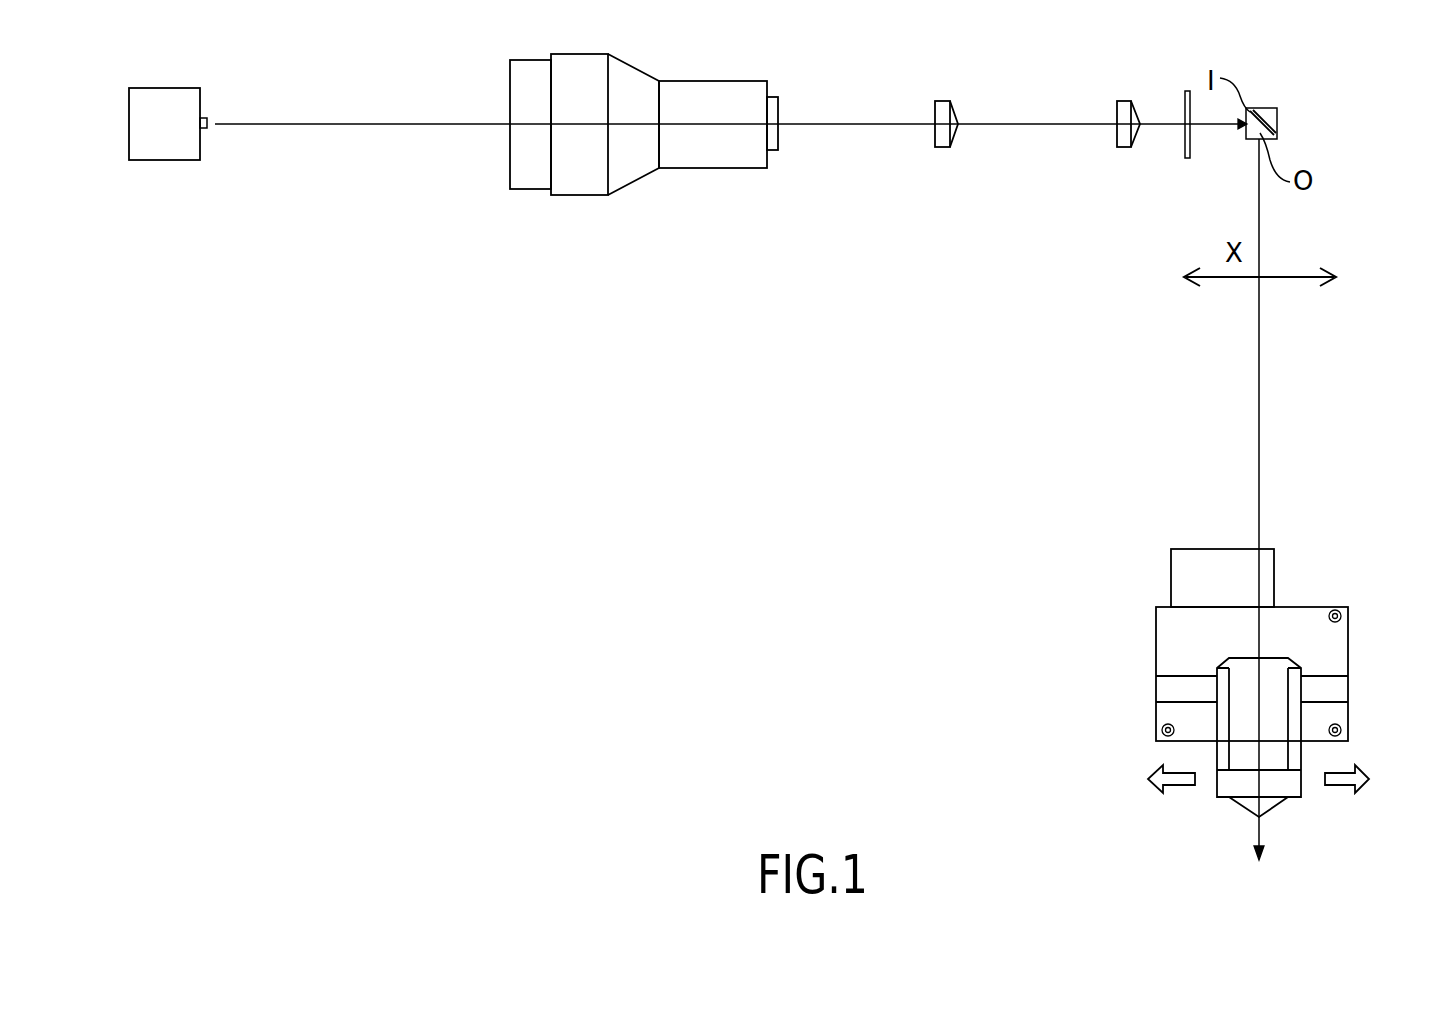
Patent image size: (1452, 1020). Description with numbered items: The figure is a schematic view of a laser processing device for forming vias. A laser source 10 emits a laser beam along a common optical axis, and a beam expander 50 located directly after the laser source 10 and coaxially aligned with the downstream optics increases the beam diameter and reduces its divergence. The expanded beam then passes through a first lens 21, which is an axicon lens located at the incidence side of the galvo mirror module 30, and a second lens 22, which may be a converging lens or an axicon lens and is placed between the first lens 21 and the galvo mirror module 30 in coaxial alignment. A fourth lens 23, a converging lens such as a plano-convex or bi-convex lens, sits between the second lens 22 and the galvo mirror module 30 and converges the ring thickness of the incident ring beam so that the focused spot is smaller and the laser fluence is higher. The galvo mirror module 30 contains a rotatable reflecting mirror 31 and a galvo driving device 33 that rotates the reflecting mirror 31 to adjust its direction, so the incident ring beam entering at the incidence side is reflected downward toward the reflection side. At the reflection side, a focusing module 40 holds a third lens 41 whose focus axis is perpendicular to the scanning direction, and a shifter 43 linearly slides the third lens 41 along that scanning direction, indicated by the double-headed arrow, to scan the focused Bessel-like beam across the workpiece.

The laser source 10 is at (165, 178).
The beam expander 50 is at (580, 176).
The first lens 21 is at (940, 148).
The second lens 22 is at (1124, 148).
The fourth lens 23 is at (1187, 160).
The galvo mirror module 30 is at (1331, 120).
The reflecting mirror 31 is at (1302, 141).
The galvo driving device 33 is at (1277, 118).
The focusing module 40 is at (1262, 695).
The third lens 41 is at (1268, 803).
The shifter 43 is at (1145, 643).